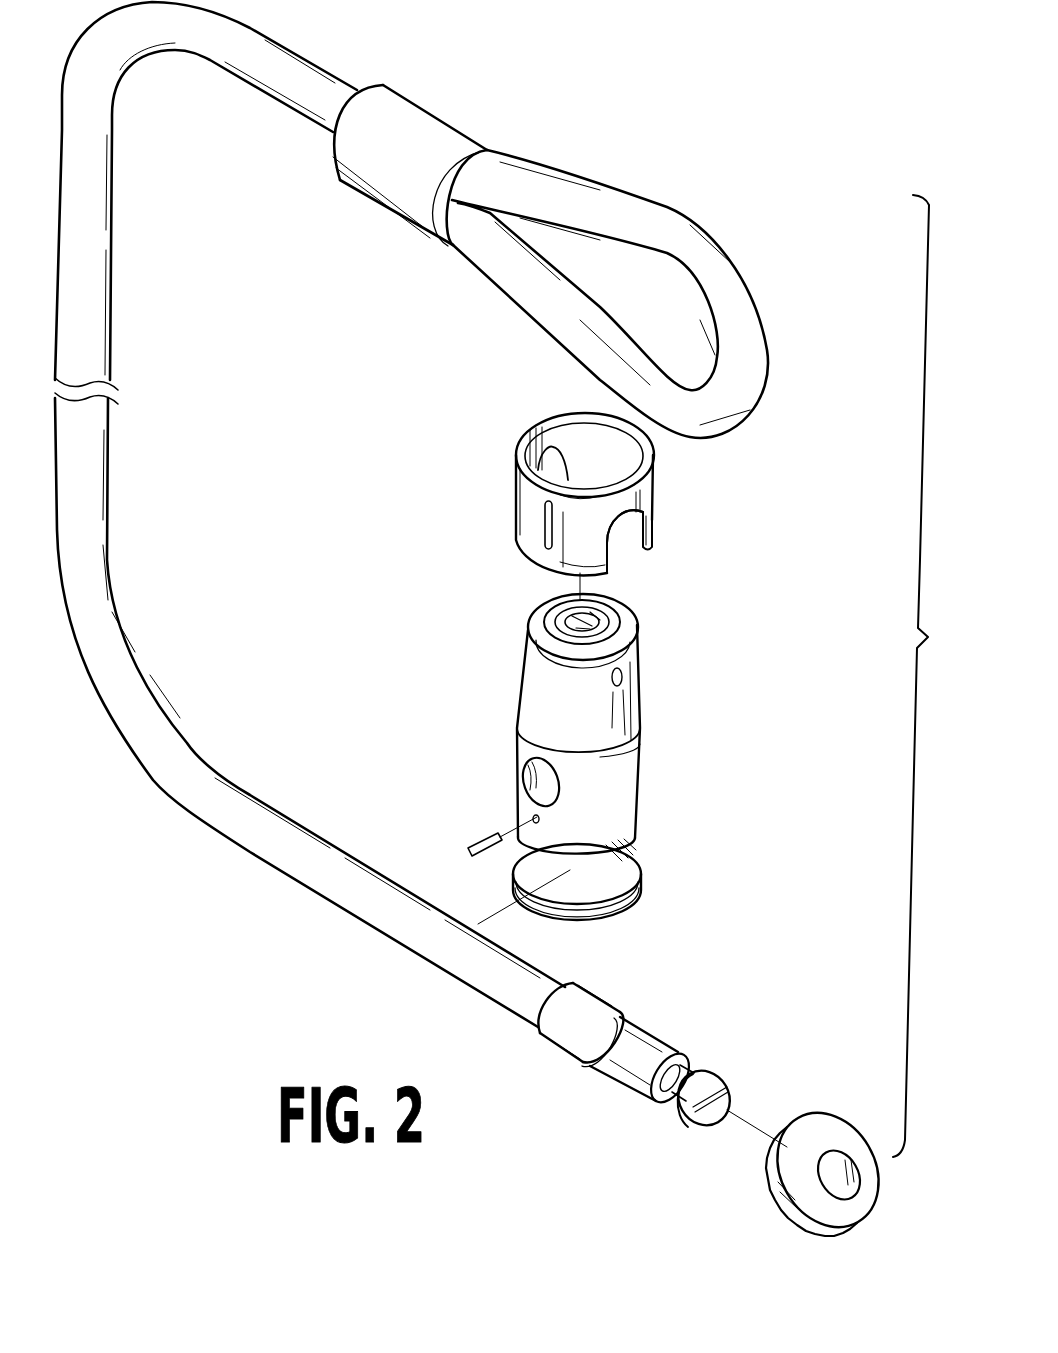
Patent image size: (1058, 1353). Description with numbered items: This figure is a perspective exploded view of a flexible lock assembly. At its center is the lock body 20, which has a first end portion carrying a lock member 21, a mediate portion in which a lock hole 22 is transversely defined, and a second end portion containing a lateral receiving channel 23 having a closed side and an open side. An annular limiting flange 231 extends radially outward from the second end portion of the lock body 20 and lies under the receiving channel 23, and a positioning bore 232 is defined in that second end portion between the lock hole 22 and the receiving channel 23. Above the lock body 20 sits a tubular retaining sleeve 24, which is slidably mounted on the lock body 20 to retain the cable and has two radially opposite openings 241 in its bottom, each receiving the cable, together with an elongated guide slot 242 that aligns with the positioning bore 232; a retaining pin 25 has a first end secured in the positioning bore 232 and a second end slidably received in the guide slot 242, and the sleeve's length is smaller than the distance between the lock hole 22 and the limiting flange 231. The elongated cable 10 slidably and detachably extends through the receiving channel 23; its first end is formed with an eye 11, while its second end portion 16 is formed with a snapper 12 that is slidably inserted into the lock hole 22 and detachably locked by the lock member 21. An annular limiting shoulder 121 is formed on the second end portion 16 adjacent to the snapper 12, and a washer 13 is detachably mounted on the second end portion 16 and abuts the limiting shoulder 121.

The elongated cable 10 is at (187, 743).
The eye 11 is at (636, 198).
The snapper 12 is at (697, 1061).
The annular limiting shoulder 121 is at (572, 1050).
The washer 13 is at (825, 1123).
The second end portion 16 is at (627, 1082).
The lock body 20 is at (642, 725).
The lock member 21 is at (548, 618).
The lock hole 22 is at (527, 775).
The lateral receiving channel 23 is at (606, 914).
The annular limiting flange 231 is at (612, 912).
The positioning bore 232 is at (533, 819).
The tubular retaining sleeve 24 is at (528, 507).
The openings 241 is at (540, 463).
The elongated guide slot 242 is at (545, 527).
The retaining pin 25 is at (467, 847).